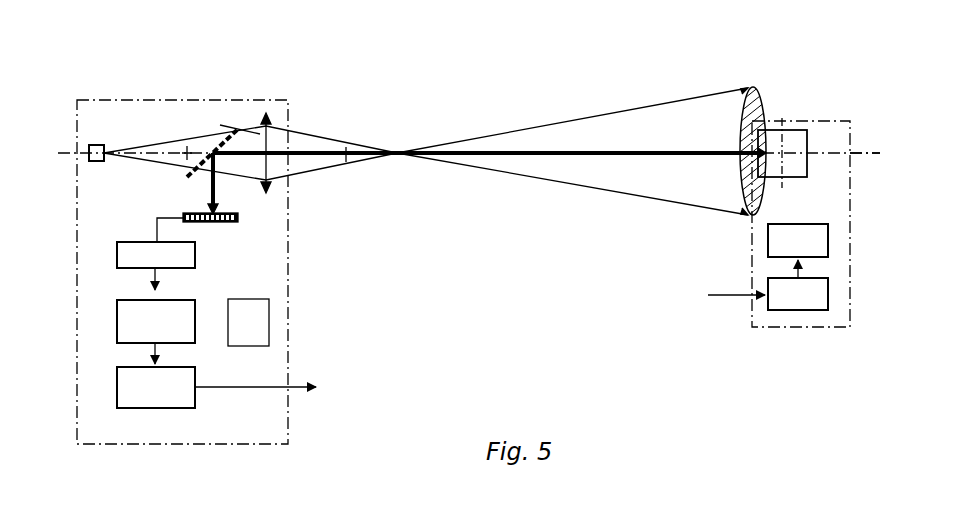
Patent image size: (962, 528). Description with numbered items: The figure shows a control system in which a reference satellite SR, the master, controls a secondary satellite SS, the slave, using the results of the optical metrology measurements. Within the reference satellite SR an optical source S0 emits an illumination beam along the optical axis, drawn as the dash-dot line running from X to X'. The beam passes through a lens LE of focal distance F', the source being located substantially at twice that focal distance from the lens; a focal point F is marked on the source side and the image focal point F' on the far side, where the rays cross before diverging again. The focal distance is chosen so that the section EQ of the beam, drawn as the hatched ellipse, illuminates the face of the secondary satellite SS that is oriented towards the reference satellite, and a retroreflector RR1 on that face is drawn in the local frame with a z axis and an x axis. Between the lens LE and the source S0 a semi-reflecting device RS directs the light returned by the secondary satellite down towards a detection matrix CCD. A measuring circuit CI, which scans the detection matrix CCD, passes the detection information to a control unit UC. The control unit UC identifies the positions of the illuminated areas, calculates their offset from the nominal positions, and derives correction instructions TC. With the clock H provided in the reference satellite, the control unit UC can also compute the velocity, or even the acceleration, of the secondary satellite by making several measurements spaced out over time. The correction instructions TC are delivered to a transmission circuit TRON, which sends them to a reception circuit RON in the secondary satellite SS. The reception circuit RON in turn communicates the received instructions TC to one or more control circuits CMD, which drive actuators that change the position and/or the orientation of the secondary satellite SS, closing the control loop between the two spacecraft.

The optical source S0 is at (95, 144).
The reference satellite SR is at (183, 100).
The semi-reflecting device RS is at (238, 128).
The lens LE is at (270, 126).
The focal point F is at (183, 163).
The focal distance F' is at (358, 142).
The detection matrix CCD is at (212, 222).
The measuring circuit CI is at (117, 255).
The control unit UC is at (117, 322).
The clock H is at (248, 322).
The correction instructions TC is at (480, 334).
The transmission circuit TRON is at (157, 408).
The optical axis X is at (467, 170).
The optical axis end X' is at (866, 165).
The beam section EQ is at (749, 87).
The retroreflector RR1 is at (768, 140).
The z axis z is at (796, 114).
The x axis x is at (820, 147).
The control circuit CMD is at (768, 240).
The reception circuit RON is at (778, 310).
The secondary satellite SS is at (800, 327).